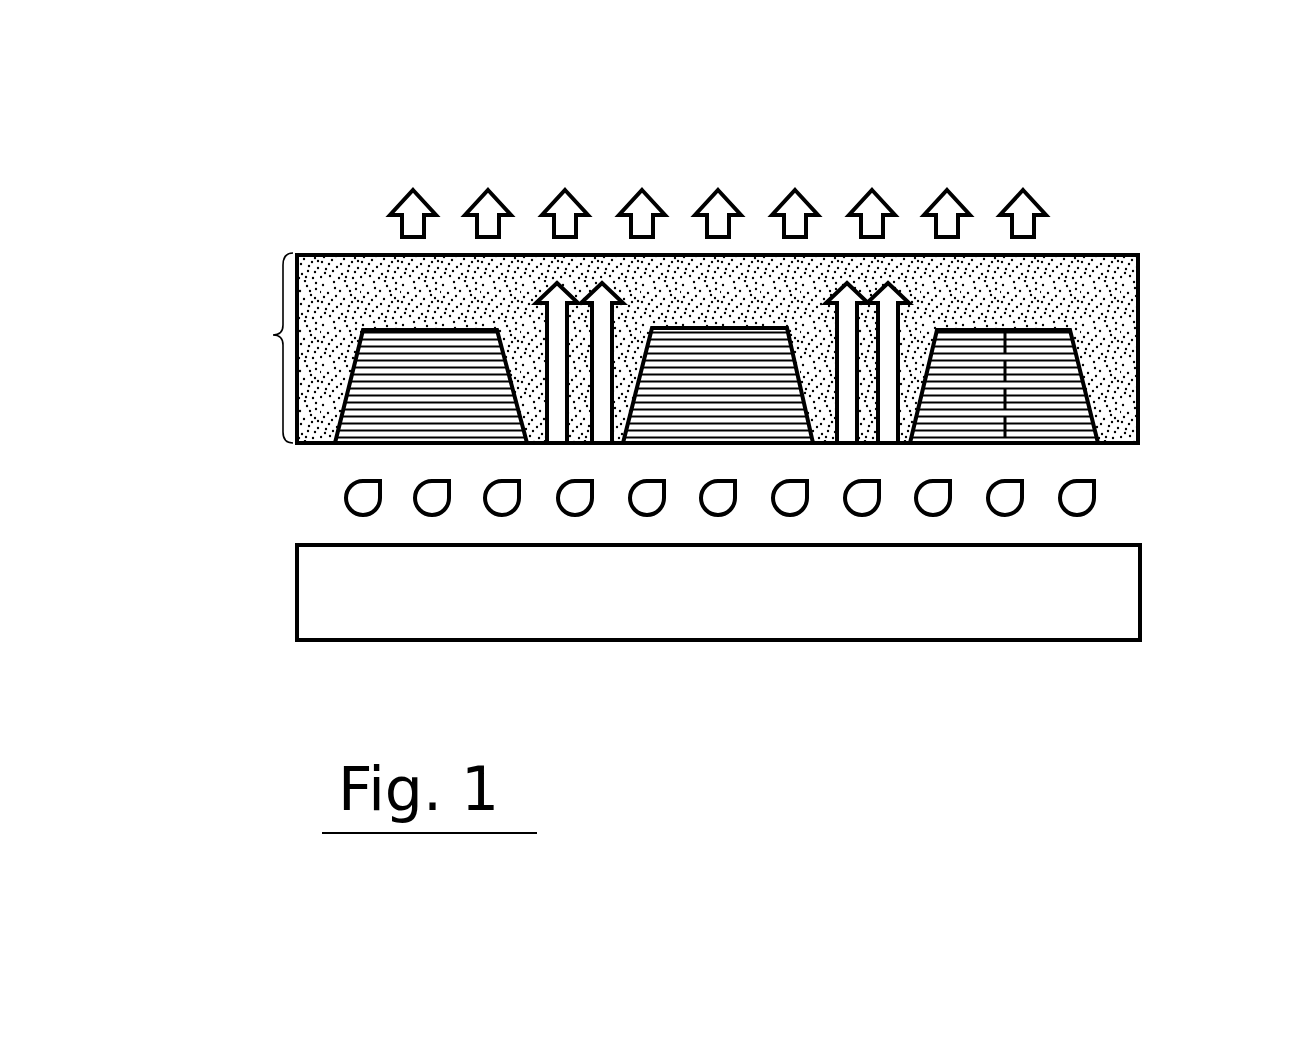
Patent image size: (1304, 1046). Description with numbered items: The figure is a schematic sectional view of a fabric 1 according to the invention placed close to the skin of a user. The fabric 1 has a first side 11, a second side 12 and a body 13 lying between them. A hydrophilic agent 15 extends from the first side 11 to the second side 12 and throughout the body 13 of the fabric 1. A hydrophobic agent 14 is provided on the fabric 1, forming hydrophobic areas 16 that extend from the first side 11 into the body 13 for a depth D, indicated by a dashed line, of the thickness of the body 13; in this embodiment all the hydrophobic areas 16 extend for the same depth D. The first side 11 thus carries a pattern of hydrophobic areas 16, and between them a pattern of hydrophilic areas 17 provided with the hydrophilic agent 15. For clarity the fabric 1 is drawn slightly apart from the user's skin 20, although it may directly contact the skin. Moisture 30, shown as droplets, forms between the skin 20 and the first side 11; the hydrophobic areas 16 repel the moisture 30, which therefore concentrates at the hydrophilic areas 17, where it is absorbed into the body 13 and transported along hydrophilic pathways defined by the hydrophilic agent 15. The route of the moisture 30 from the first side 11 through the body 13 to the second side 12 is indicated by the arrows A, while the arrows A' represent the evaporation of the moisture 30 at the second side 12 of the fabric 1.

The fabric 1 is at (721, 381).
The first side 11 is at (313, 447).
The second side 12 is at (369, 254).
The body 13 is at (721, 428).
The hydrophobic agent 14 is at (347, 383).
The hydrophilic agent 15 is at (317, 348).
The hydrophobic areas 16 is at (1064, 445).
The hydrophilic areas 17 is at (872, 442).
The user's skin 20 is at (763, 620).
The moisture 30 is at (1082, 497).
The arrows A is at (565, 197).
The arrows A' is at (909, 170).
The depth D is at (1007, 377).